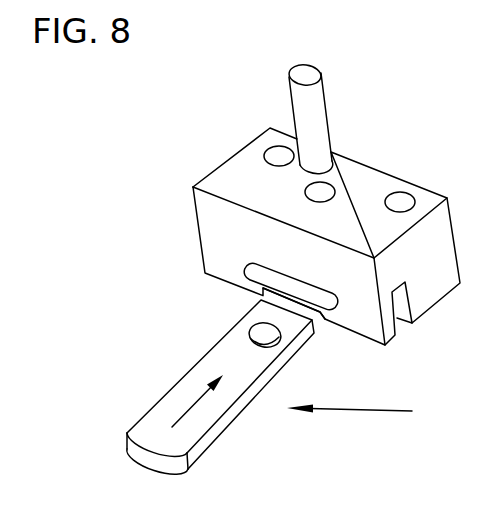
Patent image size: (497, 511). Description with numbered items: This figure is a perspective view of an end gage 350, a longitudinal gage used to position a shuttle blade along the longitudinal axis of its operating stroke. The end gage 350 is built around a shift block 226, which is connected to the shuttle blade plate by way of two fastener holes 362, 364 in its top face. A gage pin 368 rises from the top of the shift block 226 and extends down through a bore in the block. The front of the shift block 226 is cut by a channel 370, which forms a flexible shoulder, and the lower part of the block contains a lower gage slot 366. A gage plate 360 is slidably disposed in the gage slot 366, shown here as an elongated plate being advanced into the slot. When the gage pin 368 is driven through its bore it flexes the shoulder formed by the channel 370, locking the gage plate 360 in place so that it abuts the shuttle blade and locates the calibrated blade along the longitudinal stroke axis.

The shift block 226 is at (372, 165).
The gage pin 368 is at (308, 75).
The fastener hole 362 is at (290, 160).
The fastener hole 364 is at (400, 195).
The channel 370 is at (253, 268).
The lower gage slot 366 is at (325, 318).
The gage plate 360 is at (178, 390).
The end gage 350 is at (367, 416).